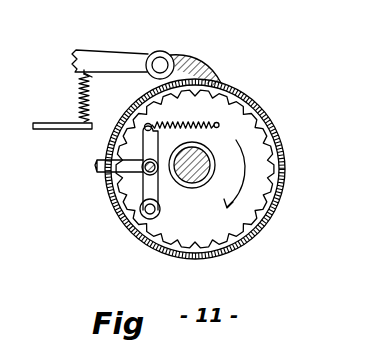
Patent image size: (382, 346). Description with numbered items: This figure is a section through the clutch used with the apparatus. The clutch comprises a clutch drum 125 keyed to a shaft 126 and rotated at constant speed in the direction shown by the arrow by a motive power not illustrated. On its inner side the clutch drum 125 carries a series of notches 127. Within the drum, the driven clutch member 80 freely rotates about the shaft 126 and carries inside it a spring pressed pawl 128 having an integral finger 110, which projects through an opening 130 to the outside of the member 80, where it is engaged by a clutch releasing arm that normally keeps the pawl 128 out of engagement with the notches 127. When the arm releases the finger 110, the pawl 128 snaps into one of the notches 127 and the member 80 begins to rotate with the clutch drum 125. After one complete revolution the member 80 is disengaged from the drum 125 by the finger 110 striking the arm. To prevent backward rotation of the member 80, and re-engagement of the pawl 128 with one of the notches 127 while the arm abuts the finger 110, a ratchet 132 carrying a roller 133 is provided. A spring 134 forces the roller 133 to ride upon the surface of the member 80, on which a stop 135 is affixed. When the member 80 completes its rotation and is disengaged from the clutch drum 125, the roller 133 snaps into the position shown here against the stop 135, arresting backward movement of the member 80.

The driven clutch member 80 is at (262, 108).
The finger 110 is at (97, 164).
The clutch drum 125 is at (180, 251).
The shaft 126 is at (197, 185).
The notches 127 is at (262, 222).
The spring pressed pawl 128 is at (147, 190).
The opening 130 is at (106, 147).
The ratchet 132 is at (99, 53).
The roller 133 is at (163, 52).
The spring 134 is at (77, 95).
The stop 135 is at (205, 67).